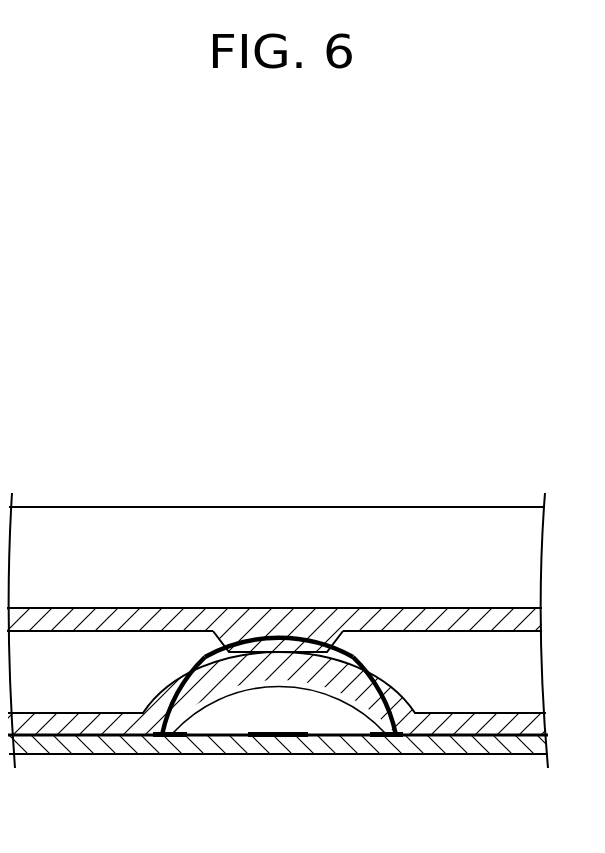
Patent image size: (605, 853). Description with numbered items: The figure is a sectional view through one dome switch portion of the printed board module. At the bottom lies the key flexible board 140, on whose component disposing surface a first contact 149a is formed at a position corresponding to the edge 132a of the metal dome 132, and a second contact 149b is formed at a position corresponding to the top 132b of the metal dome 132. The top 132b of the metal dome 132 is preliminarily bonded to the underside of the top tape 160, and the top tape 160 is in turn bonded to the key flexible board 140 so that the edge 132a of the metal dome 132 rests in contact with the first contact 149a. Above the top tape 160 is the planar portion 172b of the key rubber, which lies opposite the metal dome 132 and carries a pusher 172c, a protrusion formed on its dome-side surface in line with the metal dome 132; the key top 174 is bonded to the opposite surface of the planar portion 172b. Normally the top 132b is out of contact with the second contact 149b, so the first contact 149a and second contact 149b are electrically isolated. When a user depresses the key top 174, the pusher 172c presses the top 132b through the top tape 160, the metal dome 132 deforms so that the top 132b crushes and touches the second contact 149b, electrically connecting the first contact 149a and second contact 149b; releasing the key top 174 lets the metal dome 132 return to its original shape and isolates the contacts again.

The key top 174 is at (483, 520).
The planar portion 172b is at (193, 622).
The pusher 172c is at (263, 640).
The top tape 160 is at (347, 673).
The metal dome 132 is at (239, 695).
The edge 132a is at (176, 724).
The top 132b is at (283, 680).
The first contact 149a is at (163, 738).
The second contact 149b is at (290, 738).
The key flexible board 140 is at (447, 745).